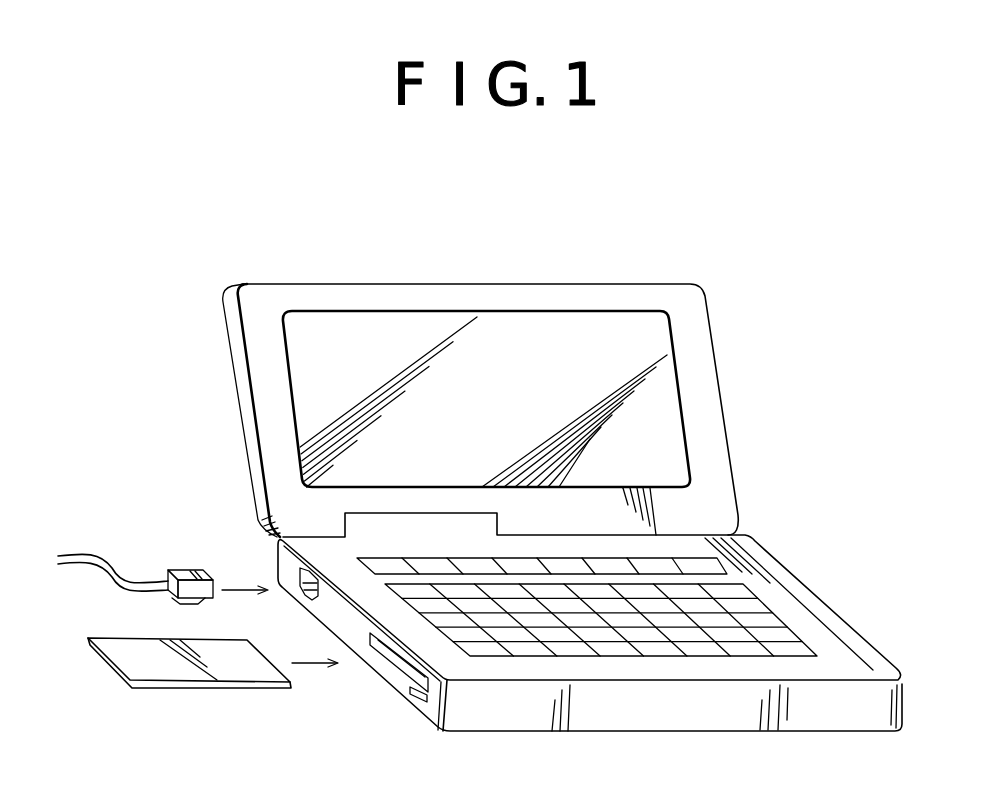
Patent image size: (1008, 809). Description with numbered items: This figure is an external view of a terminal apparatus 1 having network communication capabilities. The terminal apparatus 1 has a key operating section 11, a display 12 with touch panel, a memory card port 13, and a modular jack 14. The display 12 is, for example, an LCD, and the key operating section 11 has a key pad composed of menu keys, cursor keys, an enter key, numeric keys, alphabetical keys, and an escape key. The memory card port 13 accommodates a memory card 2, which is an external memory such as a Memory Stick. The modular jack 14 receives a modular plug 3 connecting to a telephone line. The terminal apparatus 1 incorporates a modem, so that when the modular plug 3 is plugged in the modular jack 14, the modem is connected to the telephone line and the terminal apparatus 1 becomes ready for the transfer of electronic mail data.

The terminal apparatus 1 is at (655, 733).
The memory card 2 is at (170, 690).
The modular plug 3 is at (187, 571).
The key operating section 11 is at (775, 605).
The display 12 is at (562, 325).
The memory card port 13 is at (402, 672).
The modular jack 14 is at (300, 577).